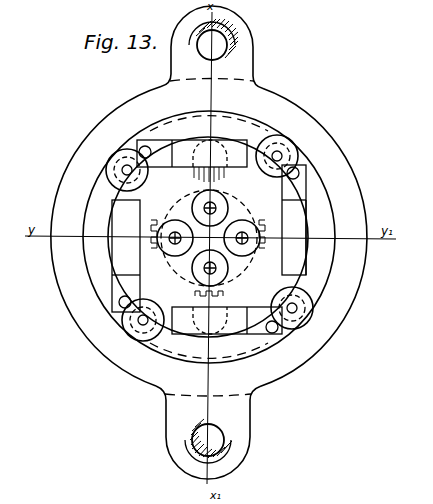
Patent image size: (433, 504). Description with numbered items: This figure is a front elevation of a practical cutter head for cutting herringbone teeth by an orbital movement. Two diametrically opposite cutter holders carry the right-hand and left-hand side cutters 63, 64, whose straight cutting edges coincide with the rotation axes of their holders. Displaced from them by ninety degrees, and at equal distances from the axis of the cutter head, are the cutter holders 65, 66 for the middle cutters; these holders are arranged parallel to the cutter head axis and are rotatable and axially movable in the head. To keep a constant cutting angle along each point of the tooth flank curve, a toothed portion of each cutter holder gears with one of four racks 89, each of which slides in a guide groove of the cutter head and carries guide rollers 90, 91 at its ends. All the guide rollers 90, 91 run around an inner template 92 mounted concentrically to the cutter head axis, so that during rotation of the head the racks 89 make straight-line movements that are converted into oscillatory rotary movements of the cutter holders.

The side cutter 63 is at (222, 205).
The side cutter 64 is at (224, 274).
The cutter holder 65 is at (180, 250).
The cutter holder 66 is at (236, 252).
The rack 89 is at (202, 223).
The guide roller 90 is at (278, 325).
The guide roller 91 is at (141, 320).
The inner template 92 is at (307, 273).